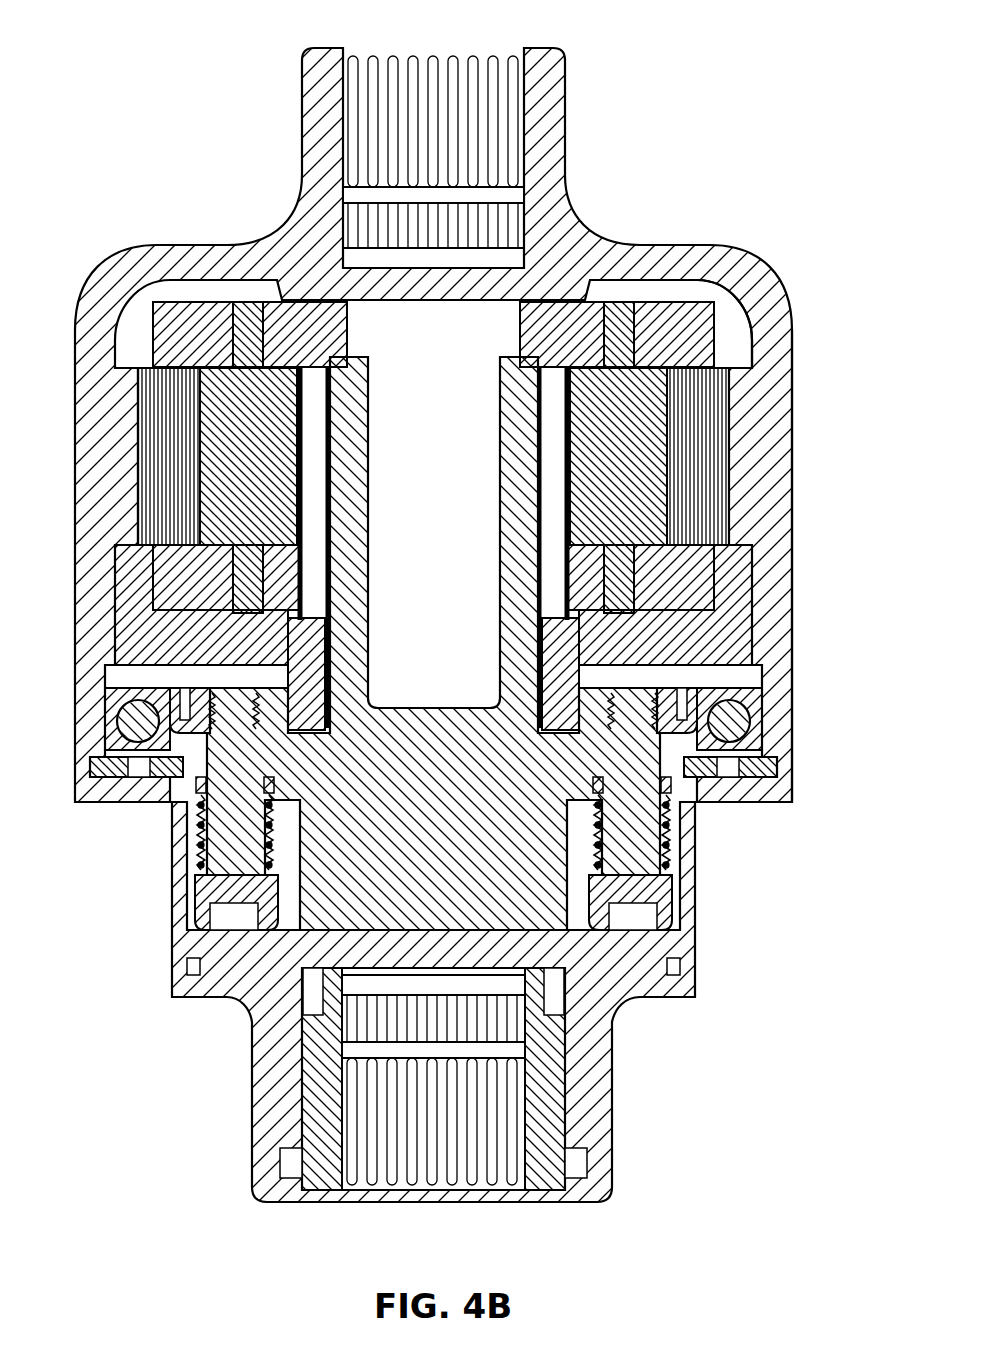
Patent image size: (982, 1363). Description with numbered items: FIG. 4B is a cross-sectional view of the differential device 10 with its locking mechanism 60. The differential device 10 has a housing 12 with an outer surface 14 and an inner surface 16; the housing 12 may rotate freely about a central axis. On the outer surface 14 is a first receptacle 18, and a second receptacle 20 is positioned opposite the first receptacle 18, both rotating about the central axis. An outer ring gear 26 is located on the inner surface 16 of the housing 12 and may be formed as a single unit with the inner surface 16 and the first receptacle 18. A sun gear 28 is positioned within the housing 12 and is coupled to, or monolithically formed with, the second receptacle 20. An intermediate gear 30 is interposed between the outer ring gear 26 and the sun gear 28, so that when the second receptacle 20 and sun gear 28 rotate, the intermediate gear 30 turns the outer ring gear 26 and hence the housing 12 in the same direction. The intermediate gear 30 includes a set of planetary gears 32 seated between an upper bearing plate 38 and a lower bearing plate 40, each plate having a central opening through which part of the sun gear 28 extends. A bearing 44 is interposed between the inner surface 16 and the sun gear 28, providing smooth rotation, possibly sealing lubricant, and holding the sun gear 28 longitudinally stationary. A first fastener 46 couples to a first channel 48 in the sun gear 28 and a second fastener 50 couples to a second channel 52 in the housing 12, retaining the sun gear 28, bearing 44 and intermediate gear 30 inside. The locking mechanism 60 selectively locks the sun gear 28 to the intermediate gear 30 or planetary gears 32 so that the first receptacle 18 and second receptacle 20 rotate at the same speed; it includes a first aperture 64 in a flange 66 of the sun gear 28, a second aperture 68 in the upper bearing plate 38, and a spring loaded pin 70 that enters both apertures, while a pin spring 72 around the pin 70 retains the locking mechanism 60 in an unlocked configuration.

The differential device 10 is at (174, 126).
The housing 12 is at (725, 285).
The outer surface 14 is at (792, 375).
The inner surface 16 is at (740, 355).
The first receptacle 18 is at (442, 80).
The second receptacle 20 is at (445, 1175).
The outer ring gear 26 is at (138, 480).
The sun gear 28 is at (418, 829).
The intermediate gear 30 is at (195, 405).
The set of planetary gears 32 is at (650, 505).
The upper bearing plate 38 is at (165, 575).
The lower bearing plate 40 is at (165, 330).
The bearing 44 is at (762, 750).
The first fastener 46 is at (168, 765).
The first channel 48 is at (200, 770).
The second fastener 50 is at (120, 790).
The second channel 52 is at (130, 760).
The locking mechanism 60 is at (608, 1060).
The first aperture 64 is at (655, 690).
The flange 66 is at (545, 663).
The second aperture 68 is at (725, 560).
The spring loaded pin 70 is at (635, 895).
The pin spring 72 is at (662, 850).